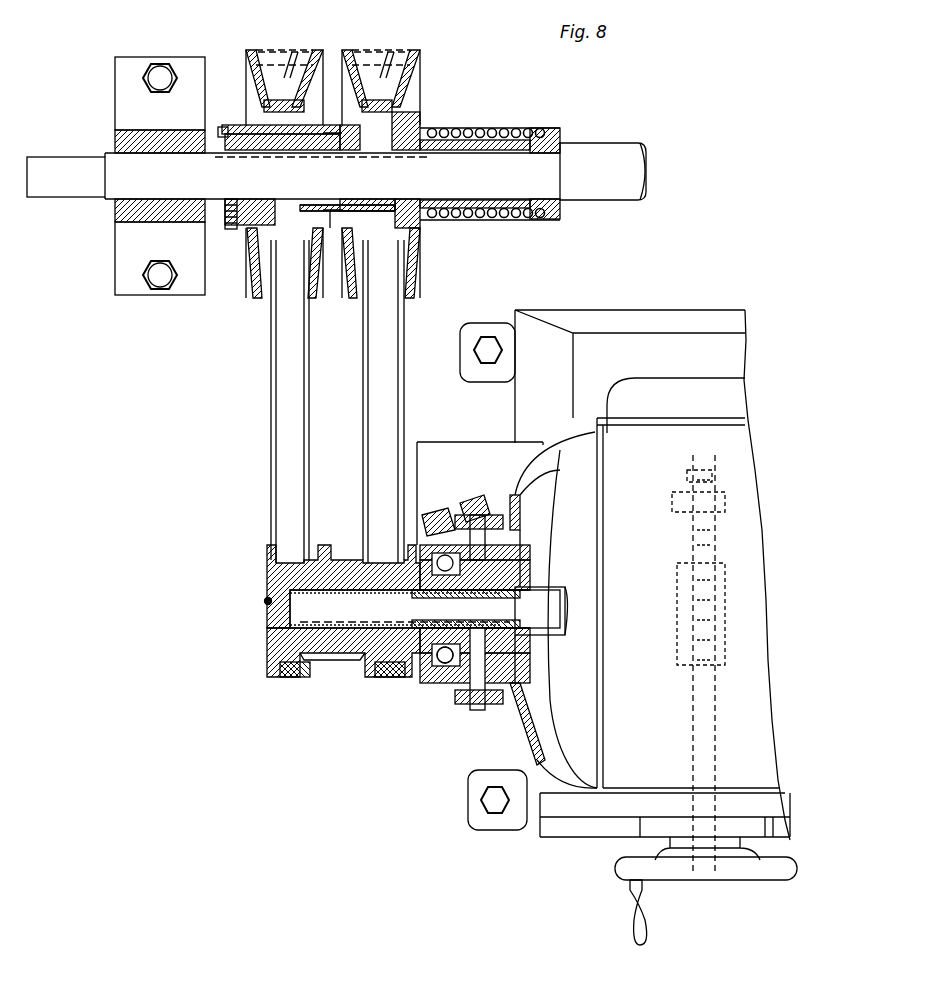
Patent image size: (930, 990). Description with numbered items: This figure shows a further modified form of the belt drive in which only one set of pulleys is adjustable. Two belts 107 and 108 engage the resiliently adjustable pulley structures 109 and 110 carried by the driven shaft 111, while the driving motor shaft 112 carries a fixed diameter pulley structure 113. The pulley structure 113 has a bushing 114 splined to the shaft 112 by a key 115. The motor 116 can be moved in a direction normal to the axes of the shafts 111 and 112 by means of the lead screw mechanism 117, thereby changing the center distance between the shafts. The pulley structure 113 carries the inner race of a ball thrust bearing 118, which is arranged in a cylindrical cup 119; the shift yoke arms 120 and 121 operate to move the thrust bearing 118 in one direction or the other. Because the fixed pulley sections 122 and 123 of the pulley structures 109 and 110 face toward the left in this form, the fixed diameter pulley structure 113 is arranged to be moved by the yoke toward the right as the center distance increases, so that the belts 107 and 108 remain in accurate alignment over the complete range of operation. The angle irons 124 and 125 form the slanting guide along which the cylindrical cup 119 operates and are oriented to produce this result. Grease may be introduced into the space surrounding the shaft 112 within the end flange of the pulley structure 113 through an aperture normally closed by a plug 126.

The belt 107 is at (270, 446).
The belt 108 is at (400, 406).
The resiliently adjustable pulley structure 109 is at (300, 60).
The resiliently adjustable pulley structure 110 is at (401, 58).
The driven shaft 111 is at (610, 146).
The driving motor shaft 112 is at (540, 582).
The fixed diameter pulley structure 113 is at (268, 648).
The bushing 114 is at (348, 660).
The key 115 is at (289, 630).
The motor 116 is at (730, 436).
The lead screw mechanism 117 is at (718, 746).
The ball thrust bearing 118 is at (445, 660).
The cylindrical cup 119 is at (456, 540).
The shift yoke arm 120 is at (492, 516).
The shift yoke arm 121 is at (476, 704).
The fixed pulley section 122 is at (250, 76).
The fixed pulley section 123 is at (348, 68).
The angle iron 124 is at (428, 516).
The angle iron 125 is at (480, 500).
The plug 126 is at (263, 601).